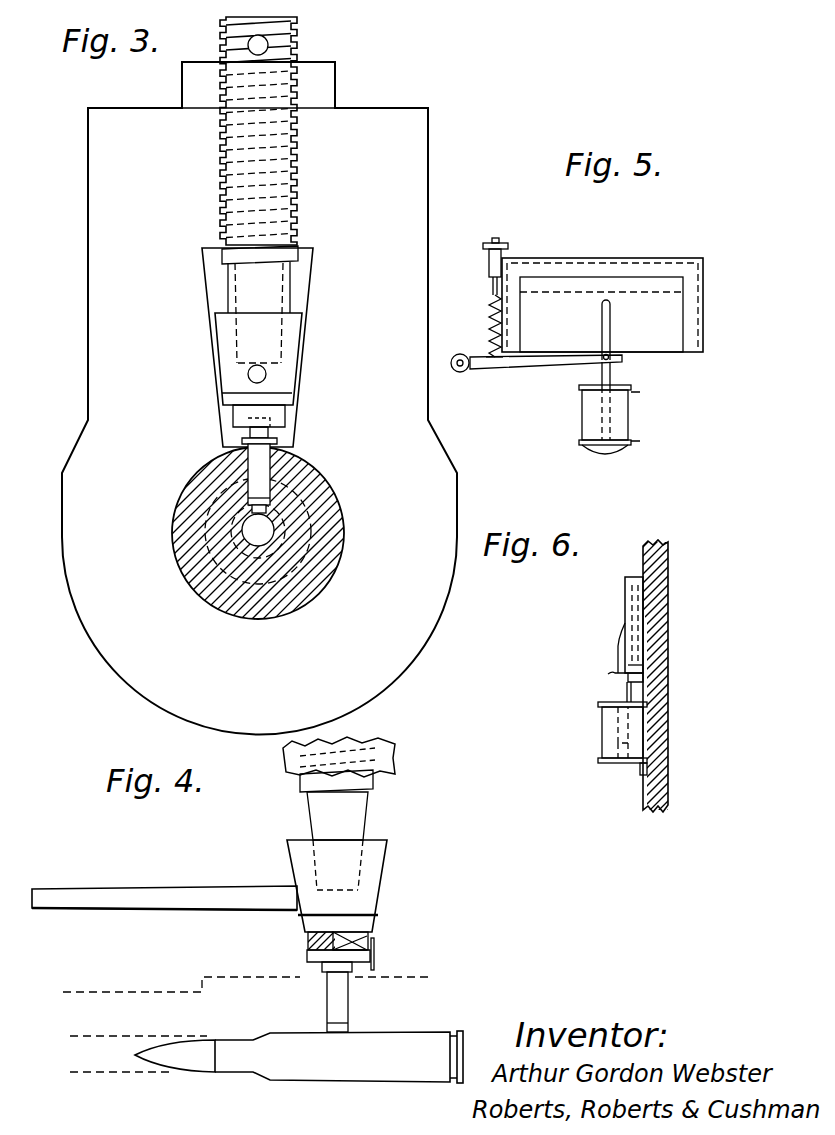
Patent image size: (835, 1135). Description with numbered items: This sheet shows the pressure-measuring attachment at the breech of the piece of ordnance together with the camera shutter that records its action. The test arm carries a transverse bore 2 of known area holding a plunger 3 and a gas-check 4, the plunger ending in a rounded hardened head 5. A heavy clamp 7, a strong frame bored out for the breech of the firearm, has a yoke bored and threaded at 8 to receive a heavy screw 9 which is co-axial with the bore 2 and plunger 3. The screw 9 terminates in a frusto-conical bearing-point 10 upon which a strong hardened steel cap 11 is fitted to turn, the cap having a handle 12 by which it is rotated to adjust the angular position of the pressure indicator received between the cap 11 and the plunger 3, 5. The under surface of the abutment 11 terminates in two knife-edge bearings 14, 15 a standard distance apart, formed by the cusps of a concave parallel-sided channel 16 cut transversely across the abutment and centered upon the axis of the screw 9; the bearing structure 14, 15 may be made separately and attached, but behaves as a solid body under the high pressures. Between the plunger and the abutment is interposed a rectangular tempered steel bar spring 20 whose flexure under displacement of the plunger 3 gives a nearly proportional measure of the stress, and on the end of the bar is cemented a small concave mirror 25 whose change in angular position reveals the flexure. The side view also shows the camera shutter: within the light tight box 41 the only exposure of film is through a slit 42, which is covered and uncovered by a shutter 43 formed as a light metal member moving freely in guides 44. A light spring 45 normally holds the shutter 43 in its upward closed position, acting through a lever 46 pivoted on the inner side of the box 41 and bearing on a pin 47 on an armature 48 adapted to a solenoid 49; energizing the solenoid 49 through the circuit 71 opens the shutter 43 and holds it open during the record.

In FIG. 3, the transverse bore 2 is at (270, 463).
In FIG. 3, the plunger 3 is at (260, 480).
In FIG. 4, the plunger 3 is at (335, 1010).
In FIG. 3, the gas-check 4 is at (340, 500).
In FIG. 4, the gas-check 4 is at (350, 1030).
In FIG. 3, the rounded hardened head 5 is at (270, 443).
In FIG. 4, the rounded hardened head 5 is at (340, 972).
In FIG. 3, the heavy clamp 7 is at (407, 193).
In FIG. 3, the threaded yoke bore 8 is at (297, 160).
In FIG. 3, the heavy screw 9 is at (293, 35).
In FIG. 3, the frusto-conical bearing-point 10 is at (273, 292).
In FIG. 4, the frusto-conical bearing-point 10 is at (339, 813).
In FIG. 3, the hardened steel cap 11 is at (285, 380).
In FIG. 4, the hardened steel cap 11 is at (367, 902).
In FIG. 3, the handle 12 is at (248, 373).
In FIG. 4, the handle 12 is at (173, 893).
In FIG. 4, the knife-edge bearing 14 is at (308, 946).
In FIG. 4, the knife-edge bearing 15 is at (372, 937).
In FIG. 3, the transverse channel 16 is at (233, 423).
In FIG. 4, the transverse channel 16 is at (358, 930).
In FIG. 4, the indicator bar spring 20 is at (312, 955).
In FIG. 4, the concave mirror 25 is at (375, 966).
In FIG. 6, the light tight box 41 is at (669, 706).
In FIG. 6, the slit 42 is at (648, 599).
In FIG. 5, the shutter 43 is at (677, 337).
In FIG. 5, the guides 44 is at (703, 312).
In FIG. 6, the guides 44 is at (627, 612).
In FIG. 5, the light spring 45 is at (490, 305).
In FIG. 5, the lever 46 is at (482, 375).
In FIG. 5, the pin 47 is at (612, 362).
In FIG. 5, the armature 48 is at (598, 370).
In FIG. 6, the armature 48 is at (626, 691).
In FIG. 5, the solenoid 49 is at (583, 423).
In FIG. 6, the solenoid 49 is at (601, 744).
In FIG. 5, the circuit 71 is at (640, 441).